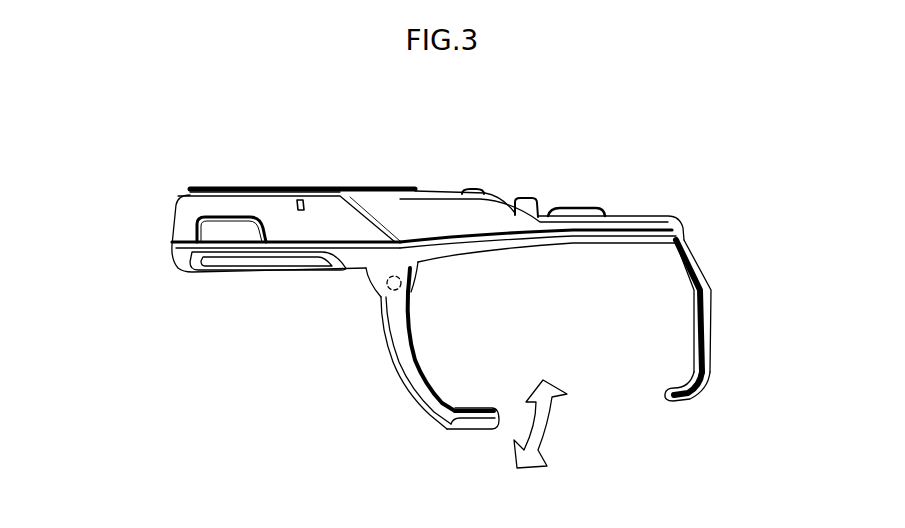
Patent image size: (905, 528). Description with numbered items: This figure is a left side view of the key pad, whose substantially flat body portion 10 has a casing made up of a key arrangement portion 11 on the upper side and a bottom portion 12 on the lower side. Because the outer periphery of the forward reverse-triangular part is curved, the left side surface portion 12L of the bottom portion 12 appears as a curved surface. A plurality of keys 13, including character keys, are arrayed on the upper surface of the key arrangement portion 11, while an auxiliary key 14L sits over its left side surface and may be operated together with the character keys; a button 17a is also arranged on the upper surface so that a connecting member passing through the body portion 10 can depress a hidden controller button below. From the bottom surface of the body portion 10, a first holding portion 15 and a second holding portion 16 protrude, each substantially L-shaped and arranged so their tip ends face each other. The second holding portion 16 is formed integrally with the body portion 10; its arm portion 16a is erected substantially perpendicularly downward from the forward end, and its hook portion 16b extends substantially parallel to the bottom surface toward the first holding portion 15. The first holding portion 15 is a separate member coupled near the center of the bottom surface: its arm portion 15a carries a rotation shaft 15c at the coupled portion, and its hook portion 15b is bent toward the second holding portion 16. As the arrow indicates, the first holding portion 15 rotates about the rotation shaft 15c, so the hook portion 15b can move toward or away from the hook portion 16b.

The body portion 10 is at (100, 193).
The key arrangement portion 11 is at (177, 216).
The bottom portion 12 is at (177, 266).
The left side surface portion 12L is at (520, 243).
The keys 13 is at (318, 181).
The key 14L is at (223, 228).
The first holding portion 15 is at (407, 414).
The arm portion 15a is at (392, 373).
The hook portion 15b is at (472, 432).
The rotation shaft 15c is at (385, 297).
The second holding portion 16 is at (712, 394).
The arm portion 16a is at (713, 336).
The hook portion 16b is at (678, 404).
The button 17a is at (526, 198).